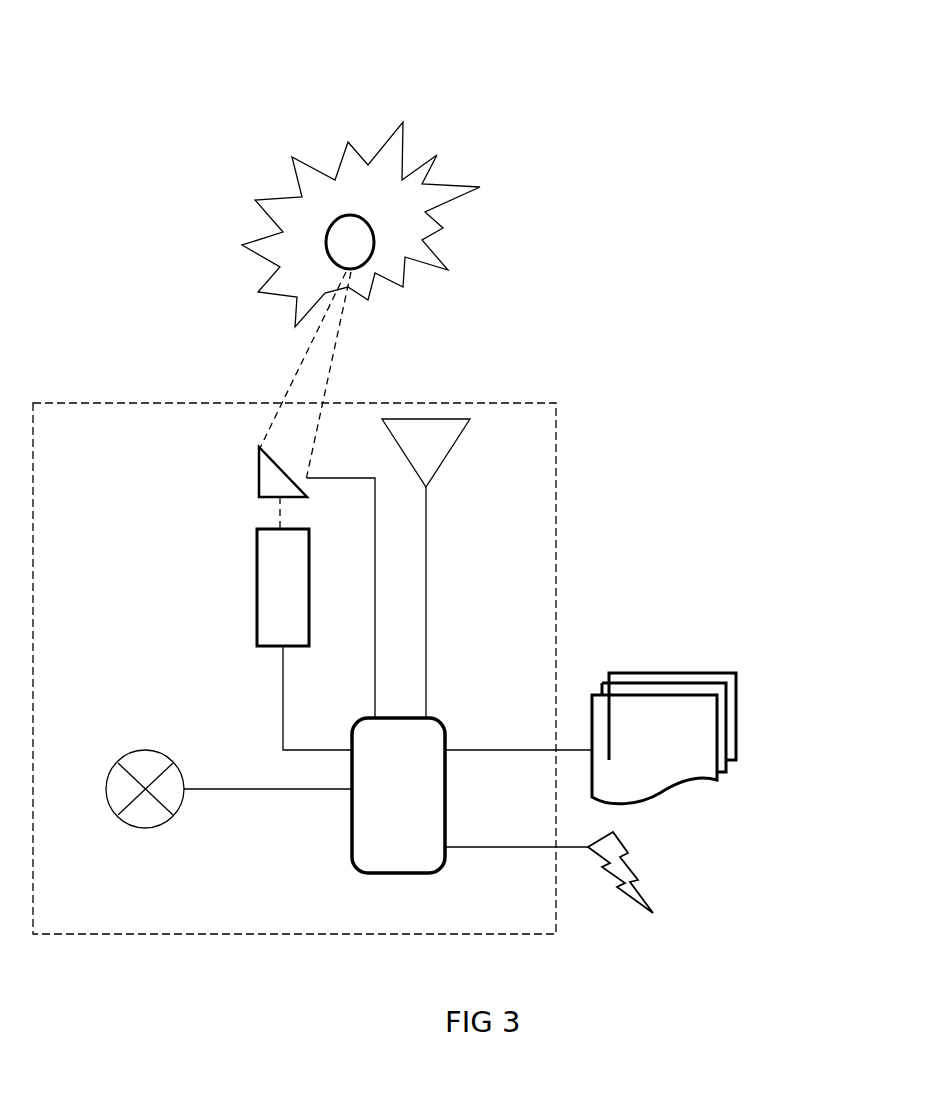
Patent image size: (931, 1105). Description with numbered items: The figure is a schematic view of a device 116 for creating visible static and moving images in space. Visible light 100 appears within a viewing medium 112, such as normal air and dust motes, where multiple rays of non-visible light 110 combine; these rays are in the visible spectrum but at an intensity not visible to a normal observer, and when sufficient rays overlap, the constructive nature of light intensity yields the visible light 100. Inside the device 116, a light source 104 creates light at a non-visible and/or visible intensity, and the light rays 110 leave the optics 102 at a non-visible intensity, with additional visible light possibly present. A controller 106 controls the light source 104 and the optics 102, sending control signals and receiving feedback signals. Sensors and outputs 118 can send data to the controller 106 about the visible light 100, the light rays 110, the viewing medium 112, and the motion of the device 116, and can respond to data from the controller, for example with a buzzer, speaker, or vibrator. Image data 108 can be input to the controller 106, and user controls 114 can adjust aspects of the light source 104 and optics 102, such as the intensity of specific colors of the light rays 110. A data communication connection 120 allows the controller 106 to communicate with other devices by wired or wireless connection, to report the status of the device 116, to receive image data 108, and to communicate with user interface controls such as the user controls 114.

The visible light 100 is at (335, 212).
The optics 102 is at (259, 477).
The light source 104 is at (257, 590).
The controller 106 is at (345, 820).
The image data 108 is at (726, 672).
The non-visible rays of light 110 is at (302, 368).
The viewing medium 112 is at (425, 163).
The user controls 114 is at (137, 750).
The device 116 is at (507, 393).
The sensors and outputs 118 is at (453, 447).
The data communication connection 120 is at (652, 868).